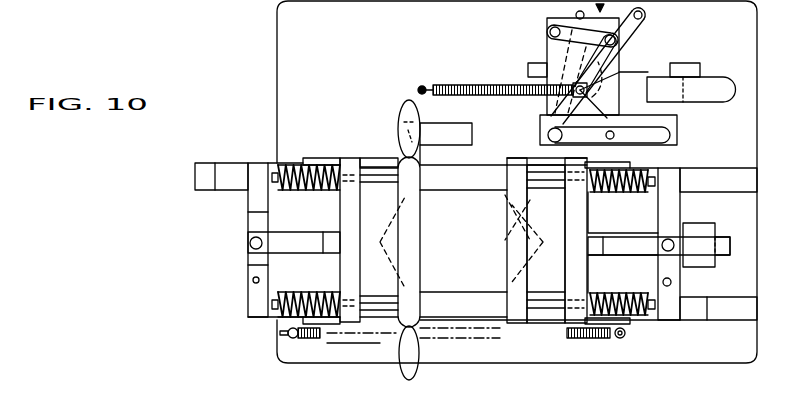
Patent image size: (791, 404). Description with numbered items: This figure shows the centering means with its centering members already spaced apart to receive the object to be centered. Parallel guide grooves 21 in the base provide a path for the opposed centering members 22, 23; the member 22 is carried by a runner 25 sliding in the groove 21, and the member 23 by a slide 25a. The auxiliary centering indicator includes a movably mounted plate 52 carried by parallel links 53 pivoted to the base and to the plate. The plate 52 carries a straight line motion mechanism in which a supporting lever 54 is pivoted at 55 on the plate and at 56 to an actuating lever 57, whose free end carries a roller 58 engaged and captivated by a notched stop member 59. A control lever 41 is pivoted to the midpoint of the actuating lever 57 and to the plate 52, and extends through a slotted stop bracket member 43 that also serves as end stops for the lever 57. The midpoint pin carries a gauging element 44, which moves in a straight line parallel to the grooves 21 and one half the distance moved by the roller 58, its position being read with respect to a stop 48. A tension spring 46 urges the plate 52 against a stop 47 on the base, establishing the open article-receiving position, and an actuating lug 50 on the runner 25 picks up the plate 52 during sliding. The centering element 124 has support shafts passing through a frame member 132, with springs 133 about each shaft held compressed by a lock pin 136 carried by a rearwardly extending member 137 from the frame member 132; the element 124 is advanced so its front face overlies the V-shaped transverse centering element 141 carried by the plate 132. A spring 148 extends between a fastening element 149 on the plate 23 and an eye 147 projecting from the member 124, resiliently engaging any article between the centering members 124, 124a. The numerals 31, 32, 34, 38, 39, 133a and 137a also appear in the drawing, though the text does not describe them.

The guide groove 21 is at (714, 170).
The centering member 22 is at (732, 303).
The centering member 23 is at (362, 352).
The runner 25 is at (540, 170).
The slide 25a is at (379, 298).
The guide block 31 is at (553, 180).
The guide plate 32 is at (556, 226).
The cap plate 34 is at (638, 170).
The stop 38 is at (722, 241).
The stop block 39 is at (697, 226).
The control lever 41 is at (603, 108).
The slotted stop bracket member 43 is at (678, 122).
The gauging element 44 is at (253, 282).
The tension spring 46 is at (492, 86).
The stop 47 is at (546, 60).
The stop 48 is at (683, 103).
The actuating lug 50 is at (397, 158).
The movably mounted plate 52 is at (550, 46).
The parallel links 53 is at (576, 8).
The supporting lever 54 is at (598, 62).
The pivot 55 is at (552, 30).
The pivot 56 is at (623, 59).
The actuating lever 57 is at (565, 106).
The roller 58 is at (548, 135).
The notched stop member 59 is at (446, 124).
The centering element 124 is at (512, 285).
The centering member 124a is at (433, 288).
The frame member 132 is at (570, 300).
The spring 133 is at (608, 188).
The compression spring 133a is at (292, 165).
The lock pin 136 is at (250, 243).
The rearwardly extending member 137 is at (644, 256).
The push rod 137a is at (305, 238).
The V-shaped transverse centering element 141 is at (498, 229).
The eye 147 is at (633, 336).
The spring 148 is at (580, 337).
The fastening element 149 is at (285, 338).